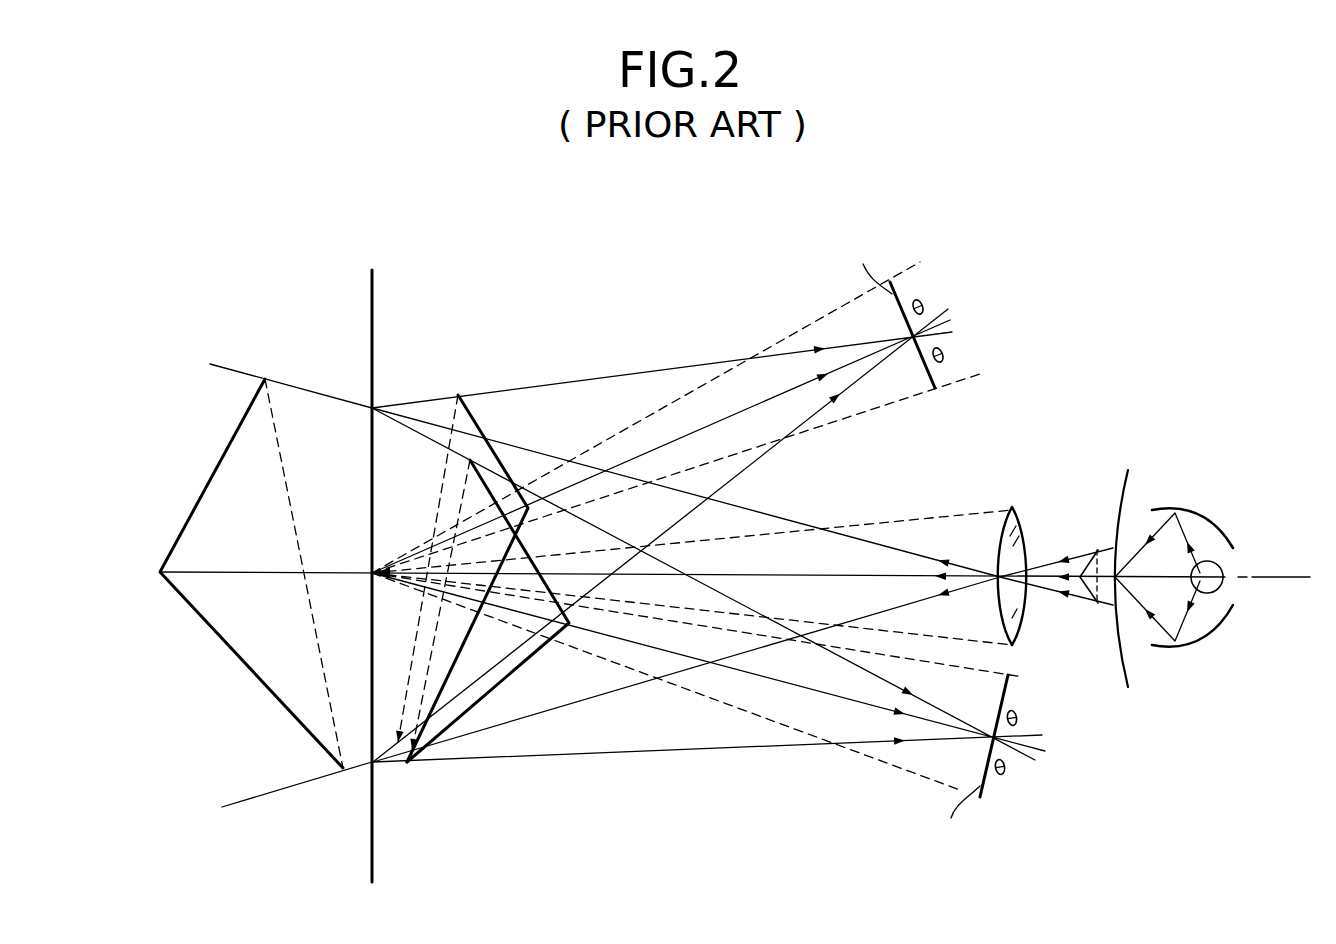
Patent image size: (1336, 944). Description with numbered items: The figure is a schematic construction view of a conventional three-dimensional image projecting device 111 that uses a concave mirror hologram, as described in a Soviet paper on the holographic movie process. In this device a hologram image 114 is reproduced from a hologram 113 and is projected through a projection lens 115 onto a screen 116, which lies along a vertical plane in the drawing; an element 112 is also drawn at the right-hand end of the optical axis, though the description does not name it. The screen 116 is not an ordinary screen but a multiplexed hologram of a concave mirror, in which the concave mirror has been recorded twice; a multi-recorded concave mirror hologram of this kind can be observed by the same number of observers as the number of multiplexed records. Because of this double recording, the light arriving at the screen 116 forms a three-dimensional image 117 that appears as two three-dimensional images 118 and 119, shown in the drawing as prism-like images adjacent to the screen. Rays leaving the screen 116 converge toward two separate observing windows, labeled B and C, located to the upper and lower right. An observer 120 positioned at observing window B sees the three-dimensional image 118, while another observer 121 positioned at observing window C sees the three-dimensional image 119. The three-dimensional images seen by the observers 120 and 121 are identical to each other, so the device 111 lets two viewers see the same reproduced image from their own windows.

The three-dimensional image projecting device 111 is at (953, 186).
The eye 112 is at (1223, 570).
The hologram 113 is at (1130, 686).
The hologram image 114 is at (1086, 592).
The projection lens 115 is at (1007, 512).
The screen 116 is at (374, 863).
The three-dimensional image 117 is at (245, 668).
The three-dimensional image 118 is at (473, 402).
The three-dimensional image 119 is at (450, 725).
The observer 120 is at (944, 356).
The observer 121 is at (1007, 767).